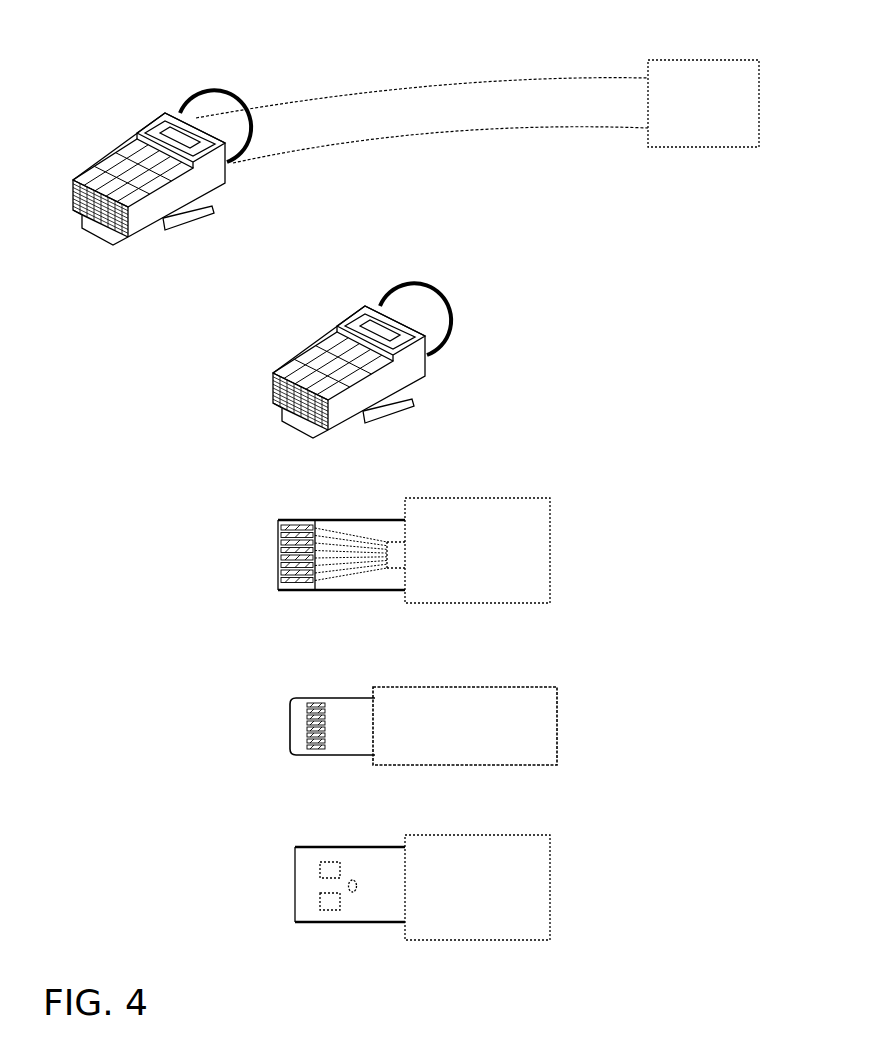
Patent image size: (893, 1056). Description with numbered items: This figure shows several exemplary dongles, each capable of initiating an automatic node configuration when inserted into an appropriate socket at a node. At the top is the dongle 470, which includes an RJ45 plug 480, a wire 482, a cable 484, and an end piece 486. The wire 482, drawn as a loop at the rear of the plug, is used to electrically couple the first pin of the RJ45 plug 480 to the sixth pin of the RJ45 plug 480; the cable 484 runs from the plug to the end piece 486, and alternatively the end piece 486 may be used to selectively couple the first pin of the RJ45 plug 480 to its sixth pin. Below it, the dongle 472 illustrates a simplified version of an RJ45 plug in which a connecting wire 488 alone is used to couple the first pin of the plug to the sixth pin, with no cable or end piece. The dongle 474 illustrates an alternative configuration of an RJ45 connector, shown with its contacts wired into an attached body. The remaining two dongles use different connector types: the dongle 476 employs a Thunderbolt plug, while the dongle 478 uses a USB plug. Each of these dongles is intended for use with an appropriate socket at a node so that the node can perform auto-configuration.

The dongle 470 is at (632, 33).
The RJ45 plug 480 is at (82, 173).
The wire 482 is at (200, 90).
The cable 484 is at (383, 105).
The end piece 486 is at (723, 138).
The dongle 472 is at (492, 370).
The connecting wire 488 is at (405, 282).
The dongle 474 is at (642, 543).
The dongle 476 is at (641, 741).
The dongle 478 is at (630, 892).